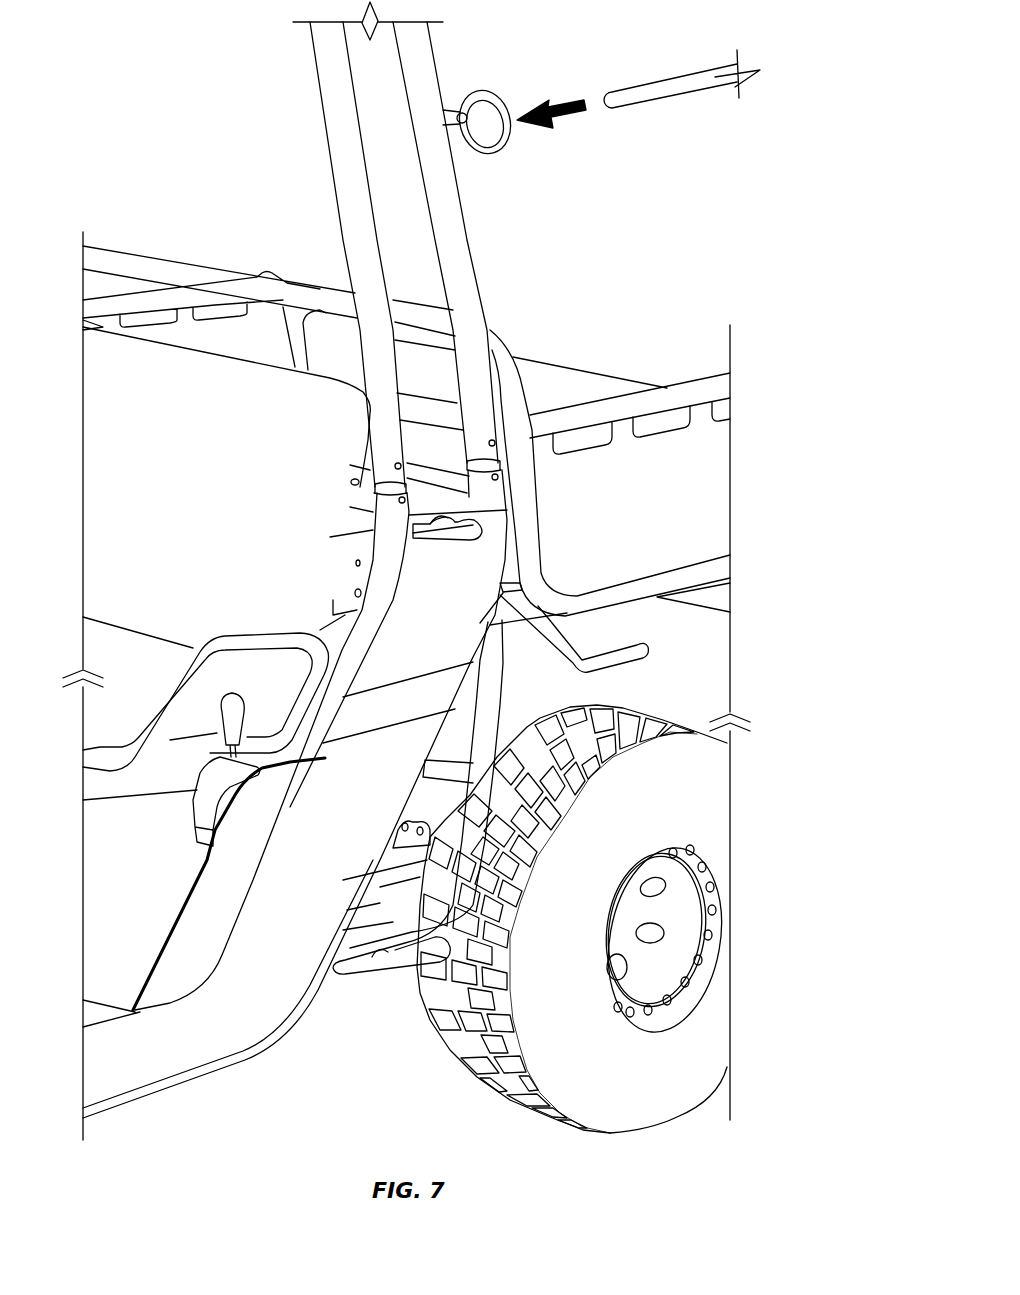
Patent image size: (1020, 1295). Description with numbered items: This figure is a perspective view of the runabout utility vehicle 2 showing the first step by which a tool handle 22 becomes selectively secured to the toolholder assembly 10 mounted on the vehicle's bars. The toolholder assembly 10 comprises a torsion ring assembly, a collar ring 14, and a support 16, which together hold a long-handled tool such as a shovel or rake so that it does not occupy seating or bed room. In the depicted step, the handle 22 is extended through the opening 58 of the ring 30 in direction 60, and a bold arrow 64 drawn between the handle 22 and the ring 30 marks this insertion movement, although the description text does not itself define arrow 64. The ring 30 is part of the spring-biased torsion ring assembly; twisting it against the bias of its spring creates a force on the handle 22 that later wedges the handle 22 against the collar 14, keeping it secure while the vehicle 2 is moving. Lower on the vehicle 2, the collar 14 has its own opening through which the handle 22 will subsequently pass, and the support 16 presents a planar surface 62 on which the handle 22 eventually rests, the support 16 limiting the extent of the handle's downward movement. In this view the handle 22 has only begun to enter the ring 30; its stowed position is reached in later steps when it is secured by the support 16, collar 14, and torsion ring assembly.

The runabout utility vehicle 2 is at (667, 282).
The toolholder assembly 10 is at (519, 142).
The collar ring 14 is at (460, 536).
The support 16 is at (410, 975).
The tool handle 22 is at (650, 80).
The ring 30 is at (493, 153).
The opening of ring 58 is at (483, 110).
The direction 60 is at (428, 525).
The planar surface of support 62 is at (372, 958).
The insertion direction arrow 64 is at (565, 102).